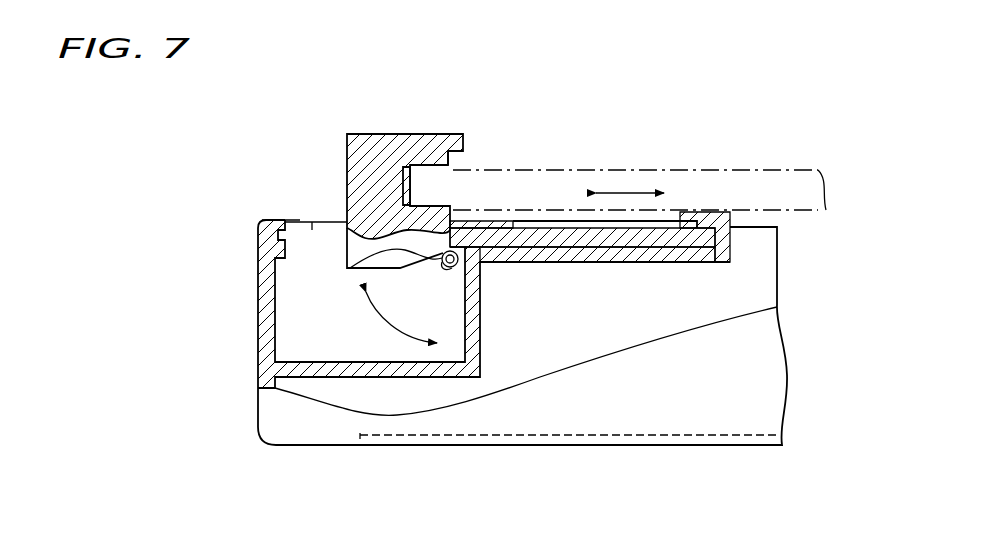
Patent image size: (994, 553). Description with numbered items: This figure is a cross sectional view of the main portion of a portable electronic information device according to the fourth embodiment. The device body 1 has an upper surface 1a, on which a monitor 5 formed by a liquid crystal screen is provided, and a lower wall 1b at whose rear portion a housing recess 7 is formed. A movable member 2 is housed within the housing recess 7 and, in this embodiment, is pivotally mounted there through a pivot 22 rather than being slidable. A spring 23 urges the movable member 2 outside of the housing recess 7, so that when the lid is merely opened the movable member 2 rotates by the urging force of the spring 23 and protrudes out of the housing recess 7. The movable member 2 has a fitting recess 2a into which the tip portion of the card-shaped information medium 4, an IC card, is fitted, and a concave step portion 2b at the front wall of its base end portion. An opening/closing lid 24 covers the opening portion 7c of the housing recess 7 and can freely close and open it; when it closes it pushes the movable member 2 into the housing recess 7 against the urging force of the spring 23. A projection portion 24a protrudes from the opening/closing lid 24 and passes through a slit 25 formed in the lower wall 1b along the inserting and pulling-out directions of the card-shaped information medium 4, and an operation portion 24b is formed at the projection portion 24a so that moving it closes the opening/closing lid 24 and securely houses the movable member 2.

The device body 1 is at (760, 358).
The upper surface 1a is at (650, 447).
The lower wall 1b is at (767, 223).
The movable member 2 is at (347, 163).
The fitting recess 2a is at (453, 181).
The concave step portion 2b is at (412, 165).
The card-shaped information medium 4 is at (653, 167).
The monitor 5 is at (530, 443).
The housing recess 7 is at (293, 322).
The opening portion 7c is at (312, 226).
The pivot 22 is at (454, 267).
The spring 23 is at (352, 268).
The opening/closing lid 24 is at (602, 236).
The projection portion 24a is at (702, 240).
The operation portion 24b is at (716, 218).
The slit 25 is at (541, 226).